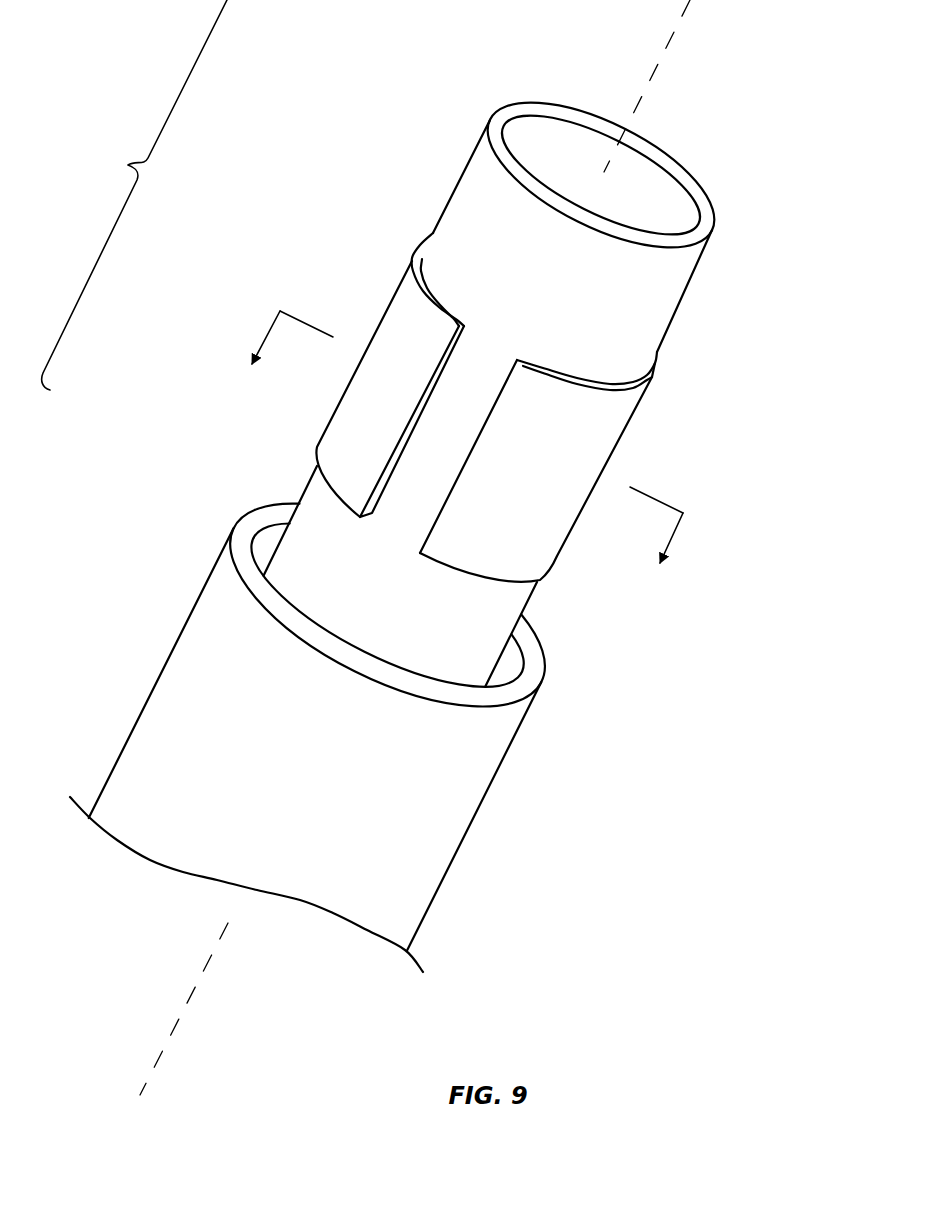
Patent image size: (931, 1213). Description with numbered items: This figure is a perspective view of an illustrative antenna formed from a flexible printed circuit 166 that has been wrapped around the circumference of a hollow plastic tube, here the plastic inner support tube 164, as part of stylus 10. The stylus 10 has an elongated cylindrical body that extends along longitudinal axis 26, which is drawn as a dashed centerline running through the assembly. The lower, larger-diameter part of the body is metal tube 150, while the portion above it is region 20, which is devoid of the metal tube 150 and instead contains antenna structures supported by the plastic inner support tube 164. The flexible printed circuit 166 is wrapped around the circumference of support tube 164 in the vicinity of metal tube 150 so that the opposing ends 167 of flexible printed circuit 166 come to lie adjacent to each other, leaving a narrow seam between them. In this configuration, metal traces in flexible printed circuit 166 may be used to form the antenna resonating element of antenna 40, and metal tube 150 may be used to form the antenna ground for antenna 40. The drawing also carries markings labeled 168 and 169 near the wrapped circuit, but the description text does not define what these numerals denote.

The stylus 10 is at (423, 547).
The region 20 is at (134, 195).
The longitudinal axis 26 is at (654, 71).
The antenna 40 is at (634, 656).
The metal tube 150 is at (497, 770).
The plastic inner support tube 164 is at (458, 191).
The flexible printed circuit 166 is at (507, 407).
The opposing ends 167 is at (463, 328).
The hinge line 168 is at (302, 320).
The deflection direction 169 is at (268, 332).